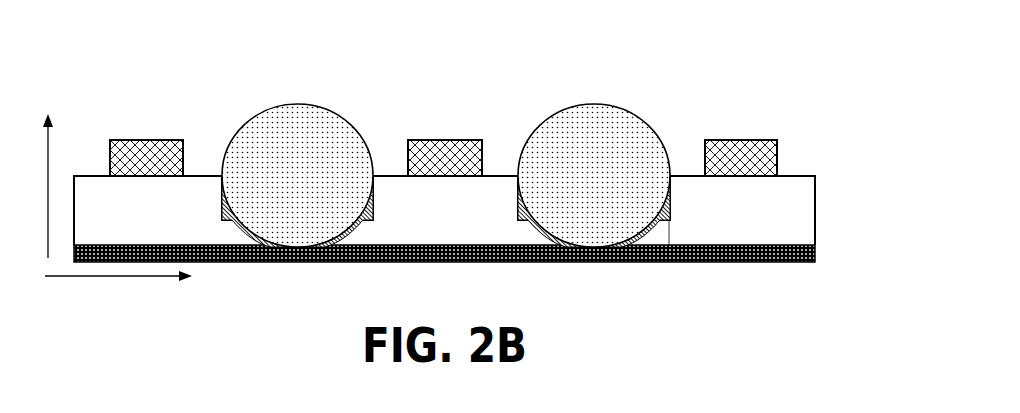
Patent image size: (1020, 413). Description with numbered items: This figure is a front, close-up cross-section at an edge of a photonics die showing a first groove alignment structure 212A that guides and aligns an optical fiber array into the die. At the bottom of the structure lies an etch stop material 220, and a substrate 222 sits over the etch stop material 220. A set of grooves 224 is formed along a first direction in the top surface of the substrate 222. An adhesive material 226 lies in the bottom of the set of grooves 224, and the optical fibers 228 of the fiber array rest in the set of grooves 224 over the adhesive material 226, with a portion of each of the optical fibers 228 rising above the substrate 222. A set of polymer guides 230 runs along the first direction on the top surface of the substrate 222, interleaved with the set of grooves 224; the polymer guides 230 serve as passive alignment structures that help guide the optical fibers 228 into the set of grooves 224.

The first groove alignment structure 212A is at (418, 36).
The etch stop material 220 is at (815, 252).
The substrate 222 is at (815, 200).
The set of grooves 224 is at (215, 163).
The adhesive material 226 is at (669, 211).
The optical fibers 228 is at (617, 103).
The set of polymer guides 230 is at (747, 138).